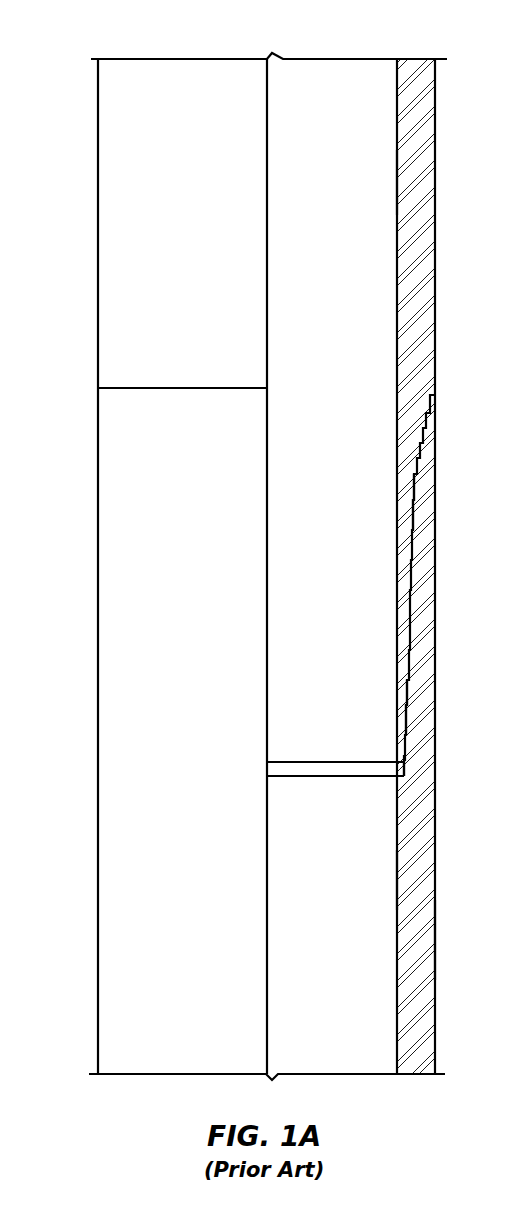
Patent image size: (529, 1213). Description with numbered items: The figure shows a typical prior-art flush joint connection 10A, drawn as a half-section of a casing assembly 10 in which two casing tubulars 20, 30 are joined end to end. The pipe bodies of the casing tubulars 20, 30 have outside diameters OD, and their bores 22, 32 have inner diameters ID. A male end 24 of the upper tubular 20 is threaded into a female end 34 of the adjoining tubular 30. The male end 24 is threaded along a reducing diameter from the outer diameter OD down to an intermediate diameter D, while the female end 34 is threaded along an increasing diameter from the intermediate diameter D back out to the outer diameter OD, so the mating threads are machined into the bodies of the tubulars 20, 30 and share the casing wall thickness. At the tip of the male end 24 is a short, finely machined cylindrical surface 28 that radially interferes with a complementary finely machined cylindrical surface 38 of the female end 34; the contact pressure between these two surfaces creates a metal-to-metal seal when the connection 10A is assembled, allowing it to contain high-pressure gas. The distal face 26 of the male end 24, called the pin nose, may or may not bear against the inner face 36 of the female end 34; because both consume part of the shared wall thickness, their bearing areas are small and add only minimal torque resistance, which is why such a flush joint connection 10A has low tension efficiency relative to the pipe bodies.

The flush joint connection 10A is at (62, 71).
The tubular assembly 10 is at (519, 27).
The casing tubular 20 is at (437, 117).
The bore 22 is at (395, 192).
The male end 24 is at (410, 620).
The distal face 26 is at (298, 762).
The cylindrical surface 28 is at (402, 718).
The casing tubular 30 is at (436, 945).
The bore 32 is at (392, 886).
The female end 34 is at (415, 508).
The inner face 36 is at (353, 770).
The cylindrical surface 38 is at (400, 758).
The outside diameter OD is at (429, 253).
The inner diameter ID is at (391, 312).
The intermediate diameter D is at (397, 725).